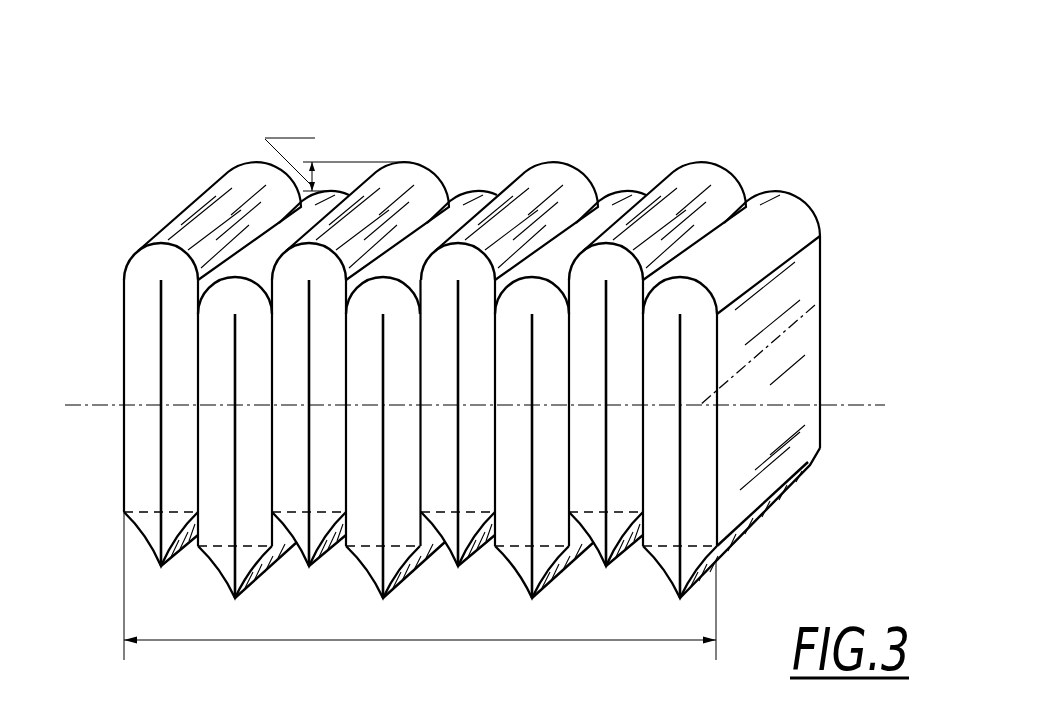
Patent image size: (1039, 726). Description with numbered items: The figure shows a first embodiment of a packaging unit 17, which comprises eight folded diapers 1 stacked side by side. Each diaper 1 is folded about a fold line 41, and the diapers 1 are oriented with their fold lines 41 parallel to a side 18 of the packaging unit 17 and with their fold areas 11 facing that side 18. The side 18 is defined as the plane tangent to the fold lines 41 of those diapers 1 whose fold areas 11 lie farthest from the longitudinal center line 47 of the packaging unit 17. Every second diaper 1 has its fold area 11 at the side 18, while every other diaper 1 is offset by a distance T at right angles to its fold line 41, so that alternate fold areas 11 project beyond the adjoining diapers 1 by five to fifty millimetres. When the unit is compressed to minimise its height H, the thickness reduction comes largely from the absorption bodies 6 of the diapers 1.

The diaper 1 is at (795, 278).
The absorption body 6 is at (800, 382).
The fold area 11 is at (161, 243).
The packaging unit 17 is at (474, 132).
The side 18 is at (575, 165).
The fold line 41 is at (790, 190).
The longitudinal center line 47 is at (795, 325).